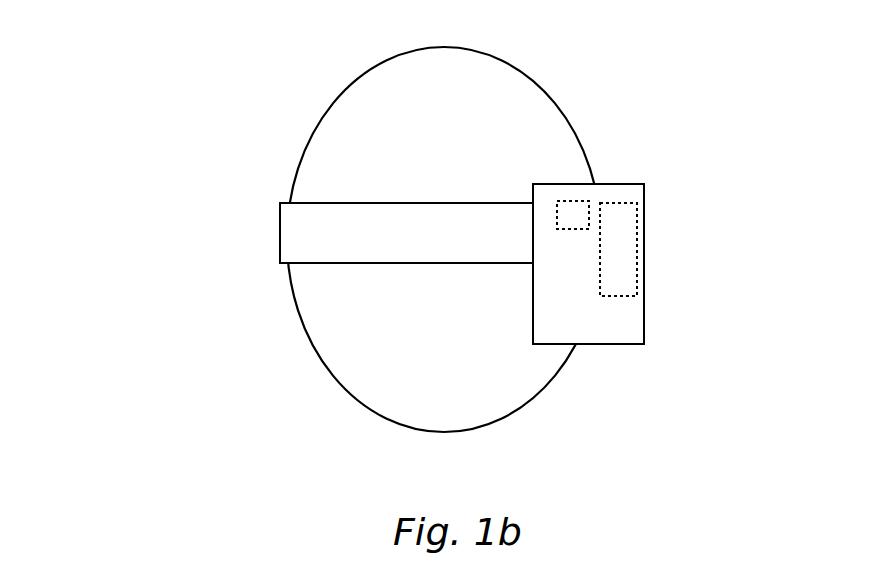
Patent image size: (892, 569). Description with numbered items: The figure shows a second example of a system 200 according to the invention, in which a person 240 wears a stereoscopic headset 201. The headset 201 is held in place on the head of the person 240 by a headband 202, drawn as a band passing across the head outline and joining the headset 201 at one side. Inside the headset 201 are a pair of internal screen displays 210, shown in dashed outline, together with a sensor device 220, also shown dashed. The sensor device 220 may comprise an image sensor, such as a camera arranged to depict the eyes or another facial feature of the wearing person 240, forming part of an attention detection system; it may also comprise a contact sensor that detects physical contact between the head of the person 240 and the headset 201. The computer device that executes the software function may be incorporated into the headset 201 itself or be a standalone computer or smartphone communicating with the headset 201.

The system 200 is at (707, 122).
The stereoscopic headset 201 is at (644, 332).
The headband 202 is at (280, 236).
The internal screen displays 210 is at (637, 252).
The sensor device 220 is at (577, 229).
The person 240 is at (320, 118).